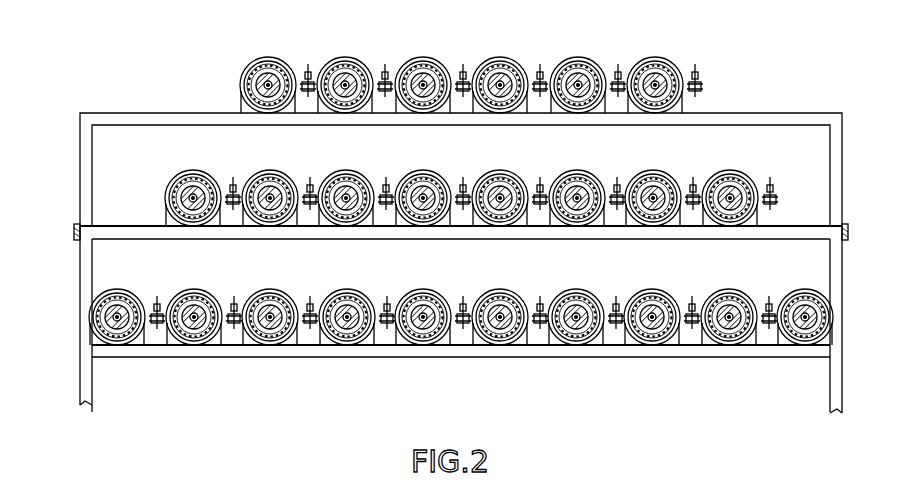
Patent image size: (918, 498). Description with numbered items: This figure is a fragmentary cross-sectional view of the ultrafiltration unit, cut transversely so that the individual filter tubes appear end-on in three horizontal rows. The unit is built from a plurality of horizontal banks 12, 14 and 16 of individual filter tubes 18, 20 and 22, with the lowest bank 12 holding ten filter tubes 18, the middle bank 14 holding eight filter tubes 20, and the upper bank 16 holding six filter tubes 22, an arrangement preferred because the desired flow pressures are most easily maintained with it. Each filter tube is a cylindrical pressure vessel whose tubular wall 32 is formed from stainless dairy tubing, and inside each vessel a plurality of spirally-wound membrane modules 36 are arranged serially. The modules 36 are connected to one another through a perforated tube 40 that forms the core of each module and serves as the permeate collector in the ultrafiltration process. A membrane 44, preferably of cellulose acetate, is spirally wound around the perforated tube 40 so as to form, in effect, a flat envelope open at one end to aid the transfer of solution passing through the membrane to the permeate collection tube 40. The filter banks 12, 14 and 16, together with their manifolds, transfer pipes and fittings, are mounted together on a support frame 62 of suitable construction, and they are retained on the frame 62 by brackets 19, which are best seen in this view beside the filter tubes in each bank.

The horizontal bank 12 is at (673, 278).
The horizontal bank 14 is at (524, 163).
The horizontal bank 16 is at (600, 50).
The filter tube 18 is at (193, 278).
The bracket 19 is at (390, 64).
The filter tube 20 is at (202, 163).
The filter tube 22 is at (285, 52).
The tubular wall 32 is at (122, 343).
The spirally-wound membrane module 36 is at (277, 98).
The perforated tube 40 is at (587, 97).
The membrane 44 is at (440, 224).
The support frame 62 is at (78, 197).